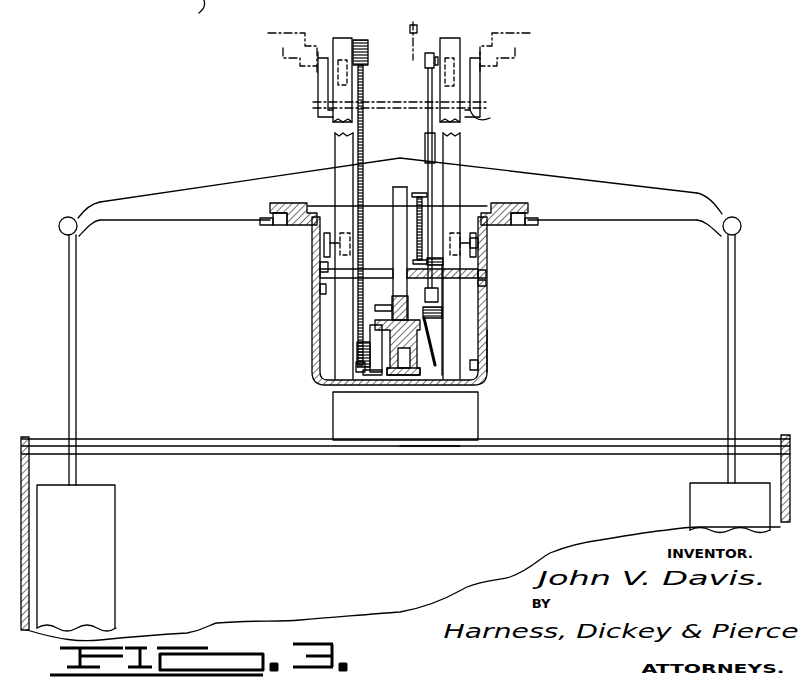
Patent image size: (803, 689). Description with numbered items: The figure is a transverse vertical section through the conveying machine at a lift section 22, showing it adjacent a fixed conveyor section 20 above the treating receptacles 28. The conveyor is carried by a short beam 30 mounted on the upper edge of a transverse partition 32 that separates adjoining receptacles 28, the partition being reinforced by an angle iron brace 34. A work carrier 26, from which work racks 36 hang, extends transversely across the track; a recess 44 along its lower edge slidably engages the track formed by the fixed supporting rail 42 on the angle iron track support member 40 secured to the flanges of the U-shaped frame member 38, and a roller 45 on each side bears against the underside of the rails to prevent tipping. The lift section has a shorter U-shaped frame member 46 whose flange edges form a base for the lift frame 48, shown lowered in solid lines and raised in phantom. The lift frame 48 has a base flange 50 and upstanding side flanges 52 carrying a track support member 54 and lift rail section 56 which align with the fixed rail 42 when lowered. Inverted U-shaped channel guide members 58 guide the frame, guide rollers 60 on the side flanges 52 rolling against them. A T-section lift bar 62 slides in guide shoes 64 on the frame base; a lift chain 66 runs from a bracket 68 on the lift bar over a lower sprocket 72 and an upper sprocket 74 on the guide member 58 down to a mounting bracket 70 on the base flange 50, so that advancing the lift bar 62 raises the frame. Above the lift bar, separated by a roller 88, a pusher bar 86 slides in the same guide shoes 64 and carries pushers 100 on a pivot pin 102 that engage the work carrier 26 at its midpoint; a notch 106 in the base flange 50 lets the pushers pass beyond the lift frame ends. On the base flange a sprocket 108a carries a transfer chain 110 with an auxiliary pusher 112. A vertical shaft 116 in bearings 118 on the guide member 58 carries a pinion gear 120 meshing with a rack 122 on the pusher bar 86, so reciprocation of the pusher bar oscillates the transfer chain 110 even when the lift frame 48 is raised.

The fixed conveyor section 20 is at (310, 372).
The lift section 22 is at (490, 361).
The work carrier 26 is at (164, 193).
The treating receptacle 28 is at (216, 0).
The short beam 30 is at (462, 412).
The transverse partition 32 is at (383, 553).
The angle iron brace 34 is at (426, 455).
The work rack 36 is at (102, 544).
The U-shaped frame member 38 is at (320, 290).
The track support member 40 is at (272, 223).
The fixed supporting rail 42 is at (272, 195).
The recess 44 is at (318, 170).
The roller 45 is at (272, 212).
The U-shaped frame member 46 is at (443, 312).
The lift frame 48 is at (494, 88).
The base flange 50 is at (492, 117).
The side flange 52 is at (316, 87).
The track support member 54 is at (282, 53).
The lift rail section 56 is at (266, 35).
The guide member 58 is at (336, 142).
The guide roller 60 is at (345, 37).
The lift bar 62 is at (410, 377).
The guide shoe 64 is at (479, 366).
The lift chain 66 is at (384, 205).
The bracket 68 is at (392, 376).
The mounting bracket 70 is at (330, 272).
The sprocket 72 is at (360, 365).
The second sprocket 74 is at (362, 40).
The pusher bar 86 is at (370, 340).
The roller 88 is at (357, 352).
The pusher 100 is at (402, 188).
The pivot pin 102 is at (392, 304).
The notch 106 is at (396, 269).
The sprocket 108a is at (440, 295).
The transfer chain 110 is at (488, 284).
The auxiliary pusher 112 is at (412, 40).
The vertical shaft 116 is at (427, 141).
The bearing 118 is at (427, 62).
The pinion gear 120 is at (436, 335).
The rack 122 is at (392, 312).